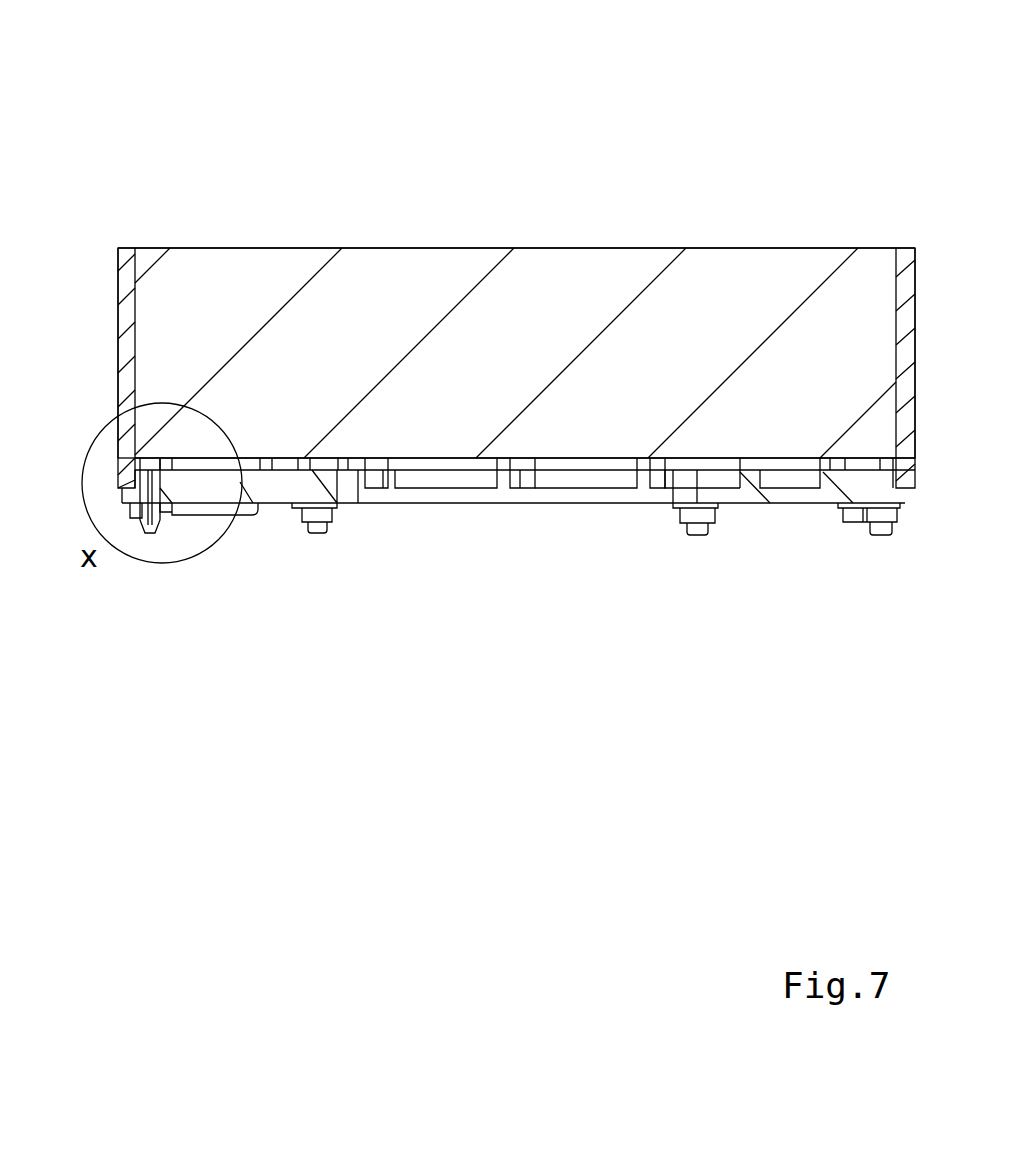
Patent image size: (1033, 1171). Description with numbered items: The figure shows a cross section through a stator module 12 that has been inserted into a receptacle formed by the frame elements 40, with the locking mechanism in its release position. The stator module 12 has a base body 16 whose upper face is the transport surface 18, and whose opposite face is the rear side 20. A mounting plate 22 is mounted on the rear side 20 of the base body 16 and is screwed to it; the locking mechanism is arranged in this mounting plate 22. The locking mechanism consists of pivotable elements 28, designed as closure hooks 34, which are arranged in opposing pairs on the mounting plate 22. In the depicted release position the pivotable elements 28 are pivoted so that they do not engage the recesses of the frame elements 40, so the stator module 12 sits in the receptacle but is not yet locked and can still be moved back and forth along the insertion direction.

The stator module 12 is at (838, 325).
The base body 16 is at (665, 318).
The transport surface 18 is at (478, 247).
The frame elements 40 is at (125, 338).
The rear side 20 is at (428, 462).
The mounting plate 22 is at (725, 478).
The closure hooks 34 is at (147, 523).
The pivotable elements 28 is at (155, 520).